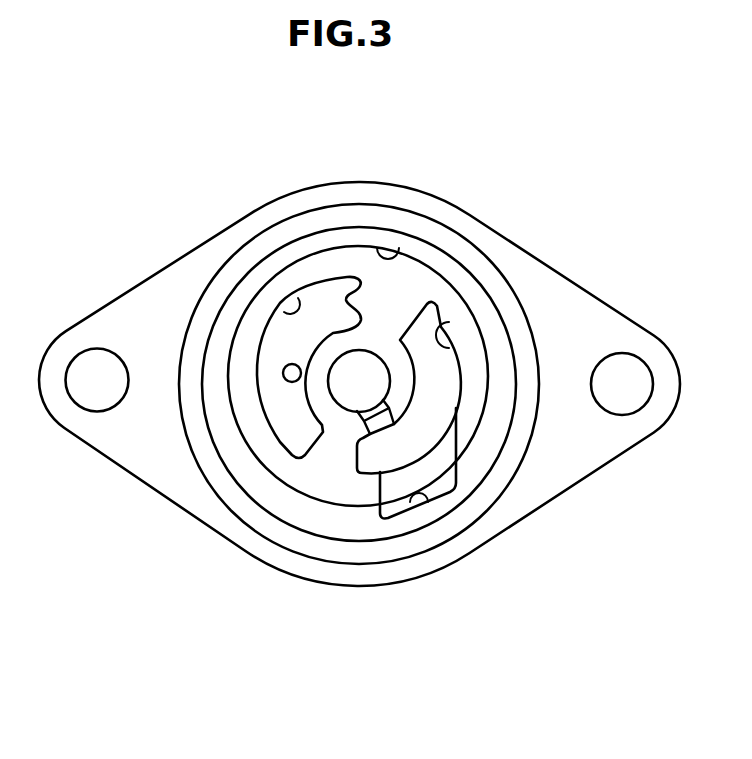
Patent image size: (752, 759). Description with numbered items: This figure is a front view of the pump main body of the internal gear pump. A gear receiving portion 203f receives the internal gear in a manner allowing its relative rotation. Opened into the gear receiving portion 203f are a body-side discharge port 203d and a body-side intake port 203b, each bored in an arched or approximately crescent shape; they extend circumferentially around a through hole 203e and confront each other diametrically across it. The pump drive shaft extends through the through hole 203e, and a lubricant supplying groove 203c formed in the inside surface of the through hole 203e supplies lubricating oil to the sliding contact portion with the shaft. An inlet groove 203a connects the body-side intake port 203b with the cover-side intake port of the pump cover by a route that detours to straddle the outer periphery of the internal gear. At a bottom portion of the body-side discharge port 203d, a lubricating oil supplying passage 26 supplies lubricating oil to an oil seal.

The lubricating oil supplying passage 26 is at (283, 375).
The inlet groove 203a is at (412, 510).
The body-side intake port 203b is at (449, 322).
The lubricant supplying groove 203c is at (378, 392).
The body-side discharge port 203d is at (298, 298).
The through hole 203e is at (388, 384).
The gear receiving portion 203f is at (379, 247).